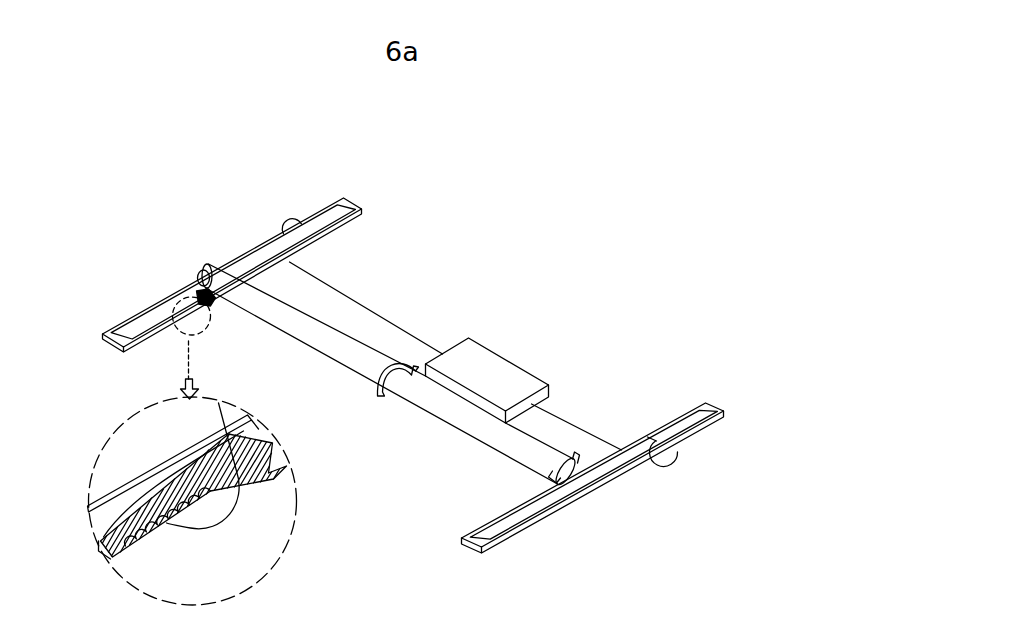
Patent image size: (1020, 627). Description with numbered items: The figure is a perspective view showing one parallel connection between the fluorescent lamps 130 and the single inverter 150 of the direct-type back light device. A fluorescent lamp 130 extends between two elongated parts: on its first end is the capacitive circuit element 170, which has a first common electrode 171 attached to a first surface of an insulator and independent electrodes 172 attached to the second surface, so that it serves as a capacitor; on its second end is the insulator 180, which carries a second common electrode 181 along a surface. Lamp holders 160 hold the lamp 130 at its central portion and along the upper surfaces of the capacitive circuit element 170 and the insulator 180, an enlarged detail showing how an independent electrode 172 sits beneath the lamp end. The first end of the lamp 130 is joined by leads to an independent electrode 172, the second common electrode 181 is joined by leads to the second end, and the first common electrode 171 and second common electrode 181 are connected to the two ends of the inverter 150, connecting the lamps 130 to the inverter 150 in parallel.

The fluorescent lamp 130 is at (468, 431).
The inverter 150 is at (484, 343).
The lamp holder 160 is at (231, 266).
The capacitive circuit element 170 is at (358, 203).
The first common electrode 171 is at (331, 207).
The independent electrode 172 is at (125, 542).
The insulator 180 is at (711, 410).
The second common electrode 181 is at (687, 418).